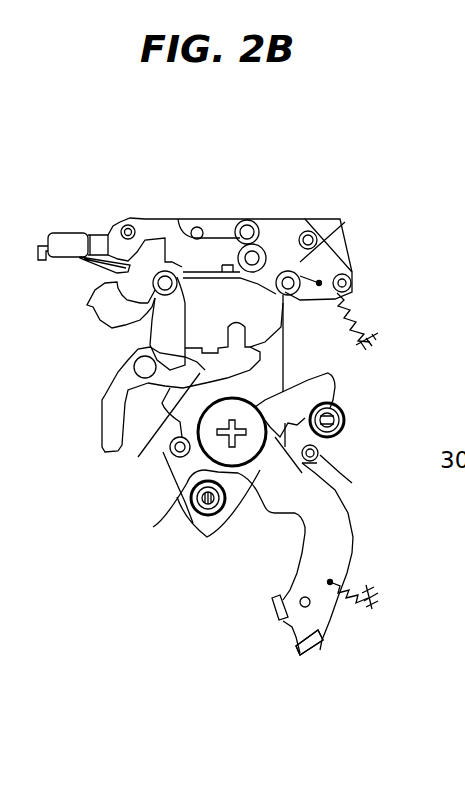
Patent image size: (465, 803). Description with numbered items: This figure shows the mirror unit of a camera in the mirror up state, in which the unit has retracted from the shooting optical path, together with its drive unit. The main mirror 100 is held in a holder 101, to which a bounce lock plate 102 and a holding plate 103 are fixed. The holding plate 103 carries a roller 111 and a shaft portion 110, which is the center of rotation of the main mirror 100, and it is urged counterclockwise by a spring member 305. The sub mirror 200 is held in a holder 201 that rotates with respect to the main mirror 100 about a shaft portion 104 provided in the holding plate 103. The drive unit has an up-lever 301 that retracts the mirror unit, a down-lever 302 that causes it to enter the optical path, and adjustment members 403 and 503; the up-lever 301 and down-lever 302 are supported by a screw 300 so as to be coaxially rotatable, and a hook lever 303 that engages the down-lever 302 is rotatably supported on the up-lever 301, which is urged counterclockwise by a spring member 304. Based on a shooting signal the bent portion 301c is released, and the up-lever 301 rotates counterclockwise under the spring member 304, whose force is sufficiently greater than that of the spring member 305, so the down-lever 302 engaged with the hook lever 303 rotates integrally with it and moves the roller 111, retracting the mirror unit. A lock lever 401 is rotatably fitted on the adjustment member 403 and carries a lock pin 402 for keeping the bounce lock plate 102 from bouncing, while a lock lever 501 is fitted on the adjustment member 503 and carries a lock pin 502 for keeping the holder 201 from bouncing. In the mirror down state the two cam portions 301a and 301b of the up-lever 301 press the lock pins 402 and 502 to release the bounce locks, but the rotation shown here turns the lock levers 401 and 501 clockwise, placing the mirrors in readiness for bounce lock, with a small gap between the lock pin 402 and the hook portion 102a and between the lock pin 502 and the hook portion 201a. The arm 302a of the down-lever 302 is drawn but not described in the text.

The main mirror 100 is at (43, 242).
The holder 101 is at (68, 238).
The sub mirror 200 is at (83, 262).
The holder 201 is at (165, 232).
The hook portion 201a is at (138, 226).
The shaft portion 104 is at (247, 238).
The holding plate 103 is at (297, 236).
The roller 111 is at (334, 242).
The shaft portion 110 is at (358, 277).
The spring member 305 is at (372, 318).
The bounce lock plate 102 is at (117, 310).
The hook portion 102a is at (93, 298).
The down-lever 302 is at (290, 320).
The pawl arm 302a is at (150, 432).
The hook lever 303 is at (110, 417).
The screw 300 is at (242, 450).
The up-lever 301 is at (340, 546).
The cam portion 301a is at (338, 405).
The cam portion 301b is at (228, 517).
The bent portion 301c is at (268, 605).
The spring member 304 is at (356, 606).
The adjustment member 503 is at (344, 418).
The lock lever 501 is at (345, 450).
The lock pin 502 is at (336, 470).
The lock pin 402 is at (165, 478).
The lock lever 401 is at (172, 490).
The adjustment member 403 is at (192, 533).